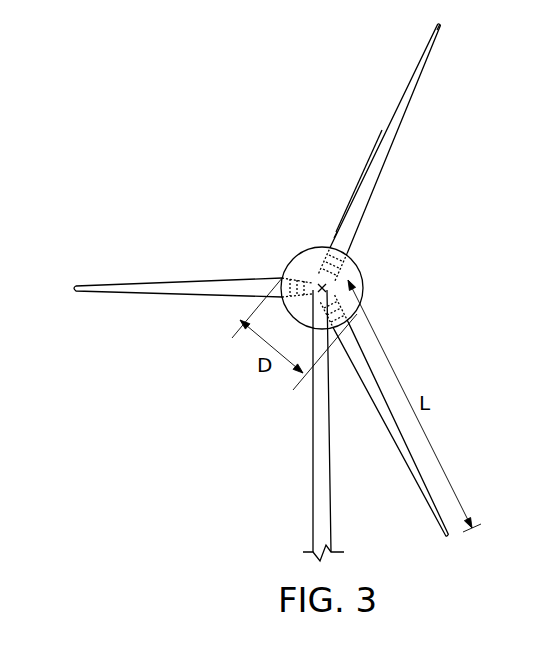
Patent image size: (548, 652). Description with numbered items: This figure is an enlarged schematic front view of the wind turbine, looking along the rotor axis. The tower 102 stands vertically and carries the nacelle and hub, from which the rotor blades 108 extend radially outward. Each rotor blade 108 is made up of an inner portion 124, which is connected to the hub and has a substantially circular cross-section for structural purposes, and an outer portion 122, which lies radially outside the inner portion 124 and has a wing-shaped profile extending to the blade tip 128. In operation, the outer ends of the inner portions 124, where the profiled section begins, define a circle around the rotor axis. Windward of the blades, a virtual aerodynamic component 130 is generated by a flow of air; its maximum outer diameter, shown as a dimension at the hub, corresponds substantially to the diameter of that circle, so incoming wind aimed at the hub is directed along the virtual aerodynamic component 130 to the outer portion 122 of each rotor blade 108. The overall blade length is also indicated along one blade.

The tower 102 is at (312, 462).
The rotor blade 108 is at (381, 178).
The outer portion 122 is at (382, 130).
The inner portion 124 is at (336, 233).
The blade tip 128 is at (441, 26).
The virtual aerodynamic component 130 is at (361, 275).